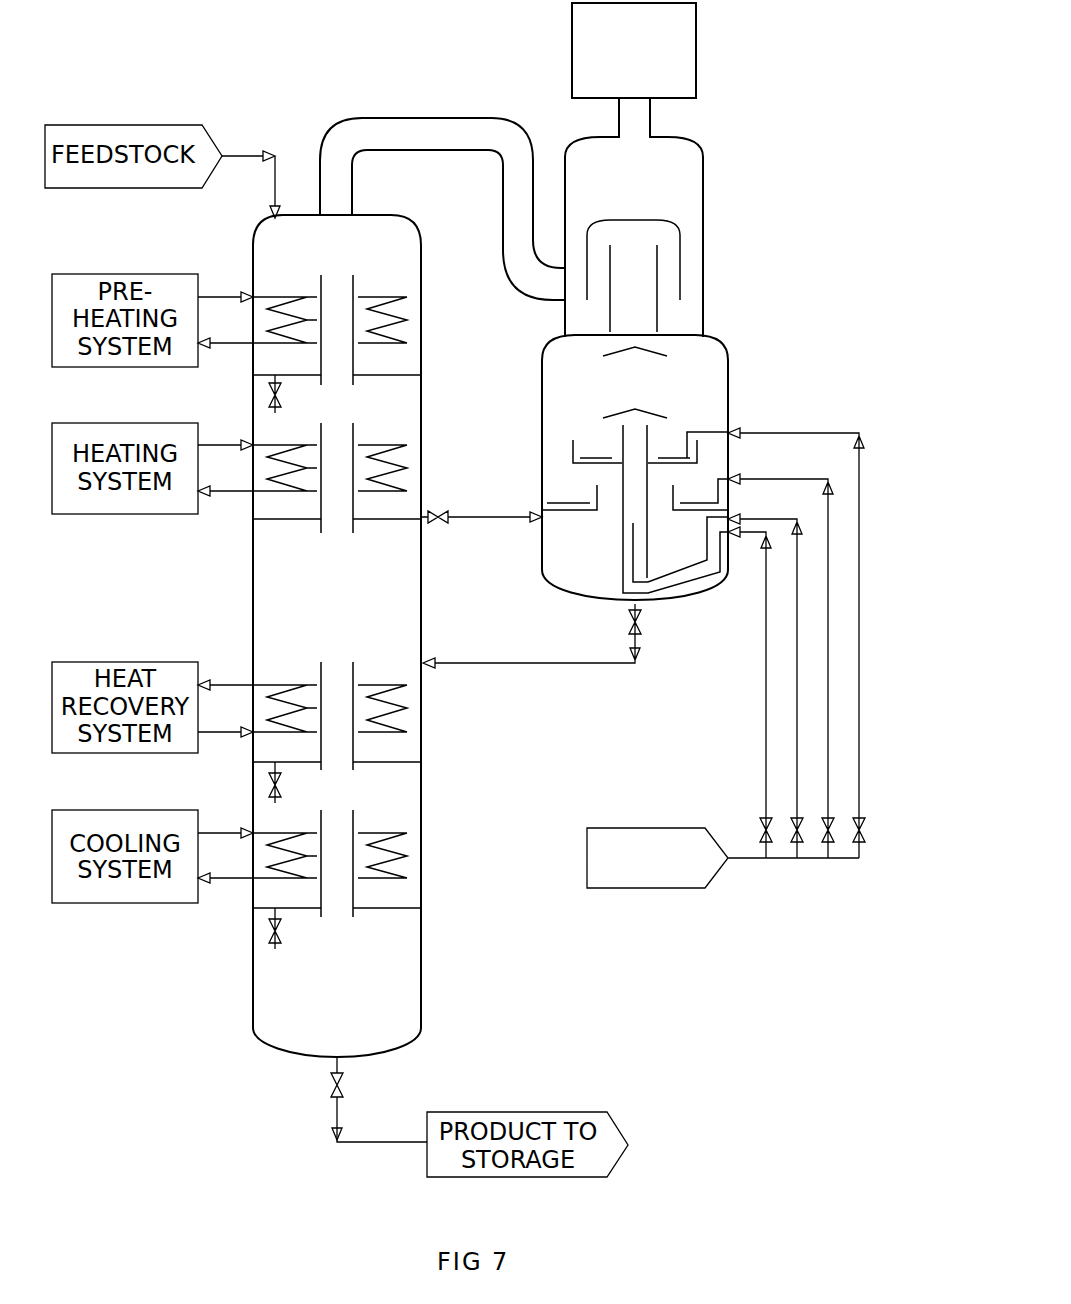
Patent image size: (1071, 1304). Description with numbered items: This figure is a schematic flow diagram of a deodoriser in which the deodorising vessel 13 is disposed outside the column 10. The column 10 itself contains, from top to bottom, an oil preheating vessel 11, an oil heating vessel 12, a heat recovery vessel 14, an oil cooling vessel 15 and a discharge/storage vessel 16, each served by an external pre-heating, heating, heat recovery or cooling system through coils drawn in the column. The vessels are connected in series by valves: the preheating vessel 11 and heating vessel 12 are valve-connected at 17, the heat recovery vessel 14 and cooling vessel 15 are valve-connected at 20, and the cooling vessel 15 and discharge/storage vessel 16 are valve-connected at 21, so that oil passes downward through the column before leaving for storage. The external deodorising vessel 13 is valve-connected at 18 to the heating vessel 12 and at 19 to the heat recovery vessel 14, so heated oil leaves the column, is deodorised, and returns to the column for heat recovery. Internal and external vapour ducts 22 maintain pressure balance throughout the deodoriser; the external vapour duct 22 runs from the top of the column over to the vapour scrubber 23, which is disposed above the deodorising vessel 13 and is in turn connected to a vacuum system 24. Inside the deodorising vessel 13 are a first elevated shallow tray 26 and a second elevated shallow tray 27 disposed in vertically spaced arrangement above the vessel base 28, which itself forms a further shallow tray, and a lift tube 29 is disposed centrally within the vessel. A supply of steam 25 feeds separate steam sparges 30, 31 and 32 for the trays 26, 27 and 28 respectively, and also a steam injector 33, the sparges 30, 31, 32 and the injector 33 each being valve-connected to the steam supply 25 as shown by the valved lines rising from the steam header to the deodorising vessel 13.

The column 10 is at (390, 218).
The oil preheating vessel 11 is at (405, 322).
The oil heating vessel 12 is at (405, 470).
The deodorising vessel 13 is at (730, 392).
The heat recovery vessel 14 is at (405, 725).
The oil cooling vessel 15 is at (405, 857).
The discharge/storage vessel 16 is at (405, 988).
The valve connection 17 is at (270, 395).
The valve connection 18 is at (438, 525).
The valve connection 19 is at (626, 620).
The valve connection 20 is at (270, 785).
The valve connection 21 is at (270, 931).
The vapour ducts 22 is at (416, 118).
The vapour scrubber 23 is at (705, 245).
The vacuum system 24 is at (697, 50).
The supply of steam 25 is at (635, 825).
The first elevated shallow tray 26 is at (570, 455).
The second elevated shallow tray 27 is at (543, 507).
The vessel base 28 is at (553, 587).
The inner tube 29 is at (622, 540).
The steam sparge 30 is at (859, 688).
The steam sparge 31 is at (828, 749).
The steam sparge 32 is at (765, 688).
The steam injector 33 is at (797, 750).